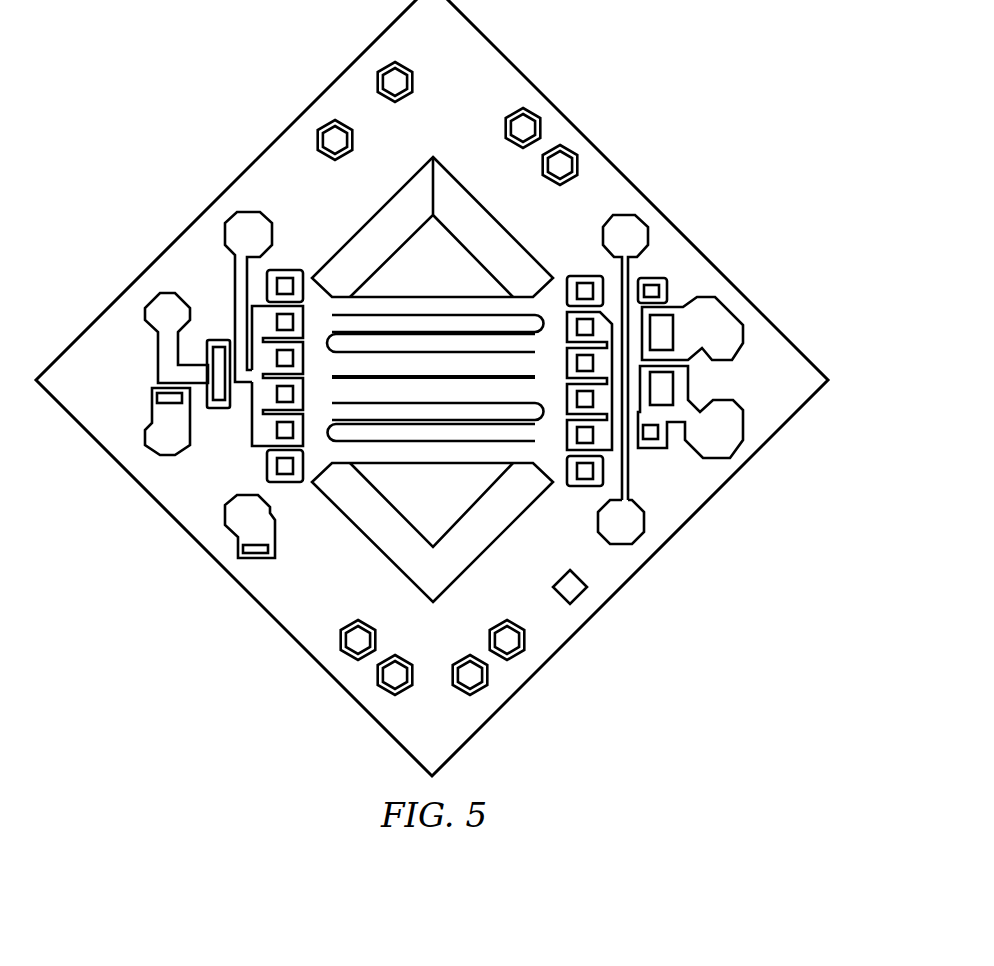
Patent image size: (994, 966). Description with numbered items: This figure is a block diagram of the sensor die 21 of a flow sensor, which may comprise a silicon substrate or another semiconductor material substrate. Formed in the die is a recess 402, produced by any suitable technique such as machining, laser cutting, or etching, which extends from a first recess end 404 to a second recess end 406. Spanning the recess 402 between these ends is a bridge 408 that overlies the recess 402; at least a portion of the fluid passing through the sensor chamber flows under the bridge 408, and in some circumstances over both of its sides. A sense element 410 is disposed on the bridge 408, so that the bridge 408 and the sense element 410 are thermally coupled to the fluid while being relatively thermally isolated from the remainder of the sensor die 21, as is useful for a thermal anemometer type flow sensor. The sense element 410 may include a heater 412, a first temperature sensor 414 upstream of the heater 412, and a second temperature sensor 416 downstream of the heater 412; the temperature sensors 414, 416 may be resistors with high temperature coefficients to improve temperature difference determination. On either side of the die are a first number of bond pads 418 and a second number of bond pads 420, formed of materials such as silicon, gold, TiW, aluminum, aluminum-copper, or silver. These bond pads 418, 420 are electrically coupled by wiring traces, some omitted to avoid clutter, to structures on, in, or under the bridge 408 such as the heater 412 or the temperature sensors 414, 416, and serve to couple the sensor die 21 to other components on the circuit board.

The sensor die 21 is at (590, 40).
The recess 402 is at (448, 260).
The first recess end 404 is at (431, 191).
The second recess end 406 is at (463, 548).
The bridge 408 is at (332, 438).
The sense element 410 is at (593, 447).
The heater 412 is at (505, 379).
The first temperature sensor 414 is at (373, 315).
The second temperature sensor 416 is at (450, 441).
The first number of bond pads 418 is at (240, 226).
The second number of bond pads 420 is at (627, 237).